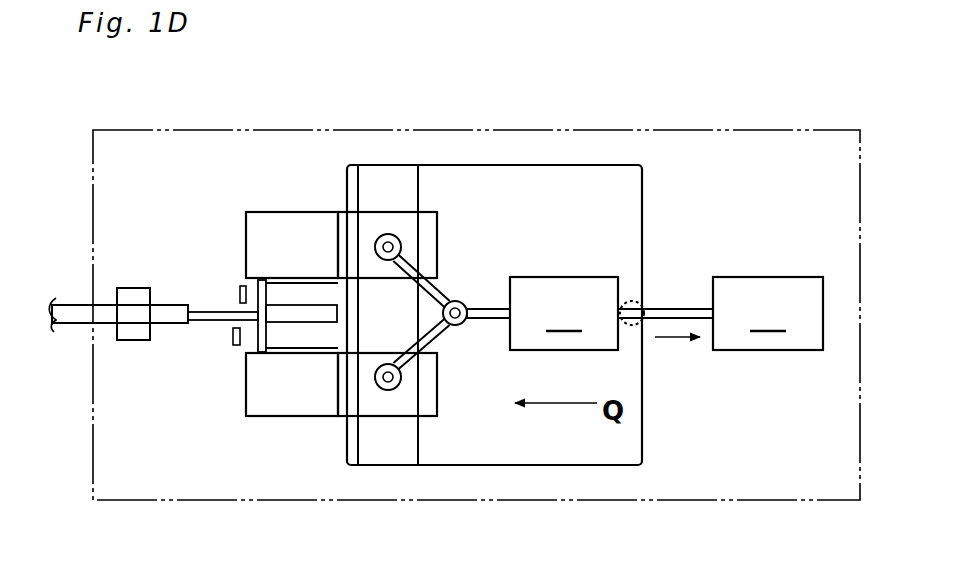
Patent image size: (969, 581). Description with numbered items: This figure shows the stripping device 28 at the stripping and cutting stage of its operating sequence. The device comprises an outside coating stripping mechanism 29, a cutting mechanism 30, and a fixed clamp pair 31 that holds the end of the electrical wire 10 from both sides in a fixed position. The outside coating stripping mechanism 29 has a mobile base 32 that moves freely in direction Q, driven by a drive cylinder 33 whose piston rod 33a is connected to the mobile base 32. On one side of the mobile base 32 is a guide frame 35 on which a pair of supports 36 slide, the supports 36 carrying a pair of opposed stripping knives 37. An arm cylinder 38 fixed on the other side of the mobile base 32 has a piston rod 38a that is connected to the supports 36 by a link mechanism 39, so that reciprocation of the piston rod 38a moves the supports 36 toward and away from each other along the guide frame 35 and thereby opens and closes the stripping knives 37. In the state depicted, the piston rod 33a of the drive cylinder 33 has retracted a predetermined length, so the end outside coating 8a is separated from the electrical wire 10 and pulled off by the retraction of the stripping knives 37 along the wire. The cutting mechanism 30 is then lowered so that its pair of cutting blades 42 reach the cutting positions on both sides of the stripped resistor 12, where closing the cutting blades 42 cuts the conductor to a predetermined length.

The end outside coating 8a is at (297, 325).
The electrical wire 10 is at (72, 298).
The stripped resistor 12 is at (200, 333).
The stripping device 28 is at (712, 128).
The outside coating stripping mechanism 29 is at (553, 162).
The cutting mechanism 30 is at (232, 303).
The fixed clamp pair 31 is at (120, 340).
The mobile base 32 is at (612, 444).
The drive cylinder 33 is at (768, 313).
The piston rod 33a is at (668, 315).
The guide frame 35 is at (388, 455).
The supports 36 is at (306, 230).
The stripping knives 37 is at (255, 282).
The arm cylinder 38 is at (577, 313).
The piston rod 38a is at (483, 312).
The link mechanism 39 is at (448, 285).
The cutting blades 42 is at (237, 300).